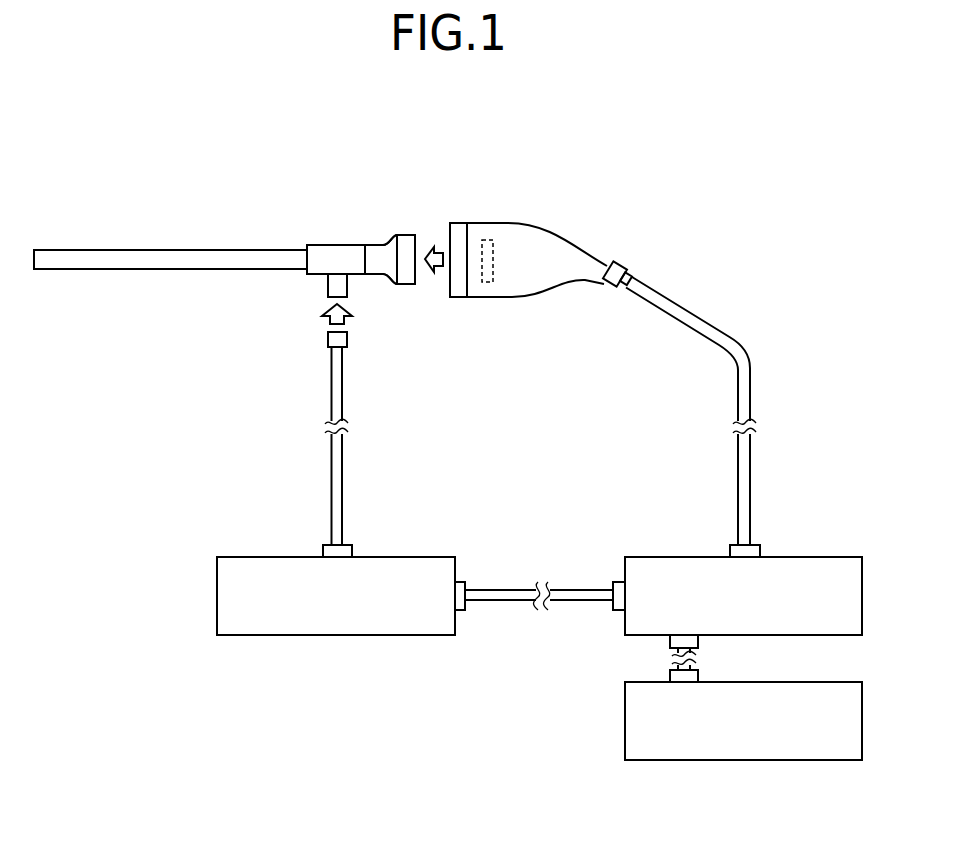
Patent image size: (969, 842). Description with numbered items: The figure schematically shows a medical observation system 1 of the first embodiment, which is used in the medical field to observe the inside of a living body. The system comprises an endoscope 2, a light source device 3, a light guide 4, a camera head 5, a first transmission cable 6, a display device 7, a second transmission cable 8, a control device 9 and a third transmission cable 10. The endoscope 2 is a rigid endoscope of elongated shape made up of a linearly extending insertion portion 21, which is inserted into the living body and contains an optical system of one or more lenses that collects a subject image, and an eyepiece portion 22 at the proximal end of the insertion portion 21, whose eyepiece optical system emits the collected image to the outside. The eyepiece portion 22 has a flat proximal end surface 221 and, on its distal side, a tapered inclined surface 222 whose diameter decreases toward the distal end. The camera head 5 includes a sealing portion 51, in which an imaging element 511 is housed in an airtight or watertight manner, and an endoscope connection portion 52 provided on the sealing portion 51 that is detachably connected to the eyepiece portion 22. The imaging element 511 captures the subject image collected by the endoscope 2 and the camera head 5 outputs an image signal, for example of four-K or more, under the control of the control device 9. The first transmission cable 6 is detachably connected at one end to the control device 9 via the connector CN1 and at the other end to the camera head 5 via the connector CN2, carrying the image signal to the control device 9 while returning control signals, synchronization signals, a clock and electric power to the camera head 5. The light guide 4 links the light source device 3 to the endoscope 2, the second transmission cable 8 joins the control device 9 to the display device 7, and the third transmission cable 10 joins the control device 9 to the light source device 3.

The medical observation system 1 is at (708, 155).
The endoscope 2 is at (255, 255).
The insertion portion 21 is at (85, 258).
The eyepiece portion 22 is at (407, 243).
The end surface 221 is at (417, 285).
The inclined surface 222 is at (392, 238).
The light source device 3 is at (395, 557).
The light guide 4 is at (331, 492).
The camera head 5 is at (522, 140).
The sealing portion 51 is at (505, 238).
The imaging element 511 is at (493, 260).
The endoscope connection portion 52 is at (458, 238).
The first transmission cable 6 is at (749, 388).
The connector CN1 is at (757, 543).
The connector CN2 is at (620, 289).
The display device 7 is at (812, 682).
The second transmission cable 8 is at (675, 665).
The control device 9 is at (812, 556).
The third transmission cable 10 is at (585, 590).